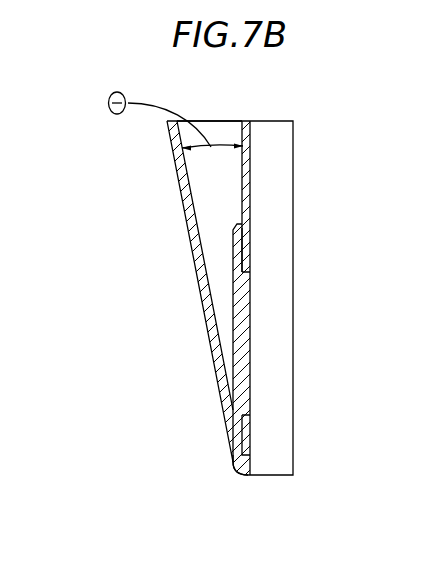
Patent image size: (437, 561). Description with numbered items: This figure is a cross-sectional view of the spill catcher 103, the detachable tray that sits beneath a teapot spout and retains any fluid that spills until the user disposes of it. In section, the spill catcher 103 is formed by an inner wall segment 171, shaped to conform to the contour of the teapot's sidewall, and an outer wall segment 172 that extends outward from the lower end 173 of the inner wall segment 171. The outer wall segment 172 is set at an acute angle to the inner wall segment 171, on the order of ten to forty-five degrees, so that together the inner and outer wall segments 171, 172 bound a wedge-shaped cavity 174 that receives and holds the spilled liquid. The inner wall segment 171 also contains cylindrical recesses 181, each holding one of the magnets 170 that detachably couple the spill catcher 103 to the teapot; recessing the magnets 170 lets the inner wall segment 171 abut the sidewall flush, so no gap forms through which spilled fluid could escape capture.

The spill catcher 103 is at (330, 108).
The magnets 170 is at (252, 252).
The inner wall segment 171 is at (249, 176).
The outer wall segment 172 is at (180, 186).
The lower end 173 is at (242, 467).
The wedge-shaped cavity 174 is at (222, 130).
The cylindrical recesses 181 is at (243, 252).